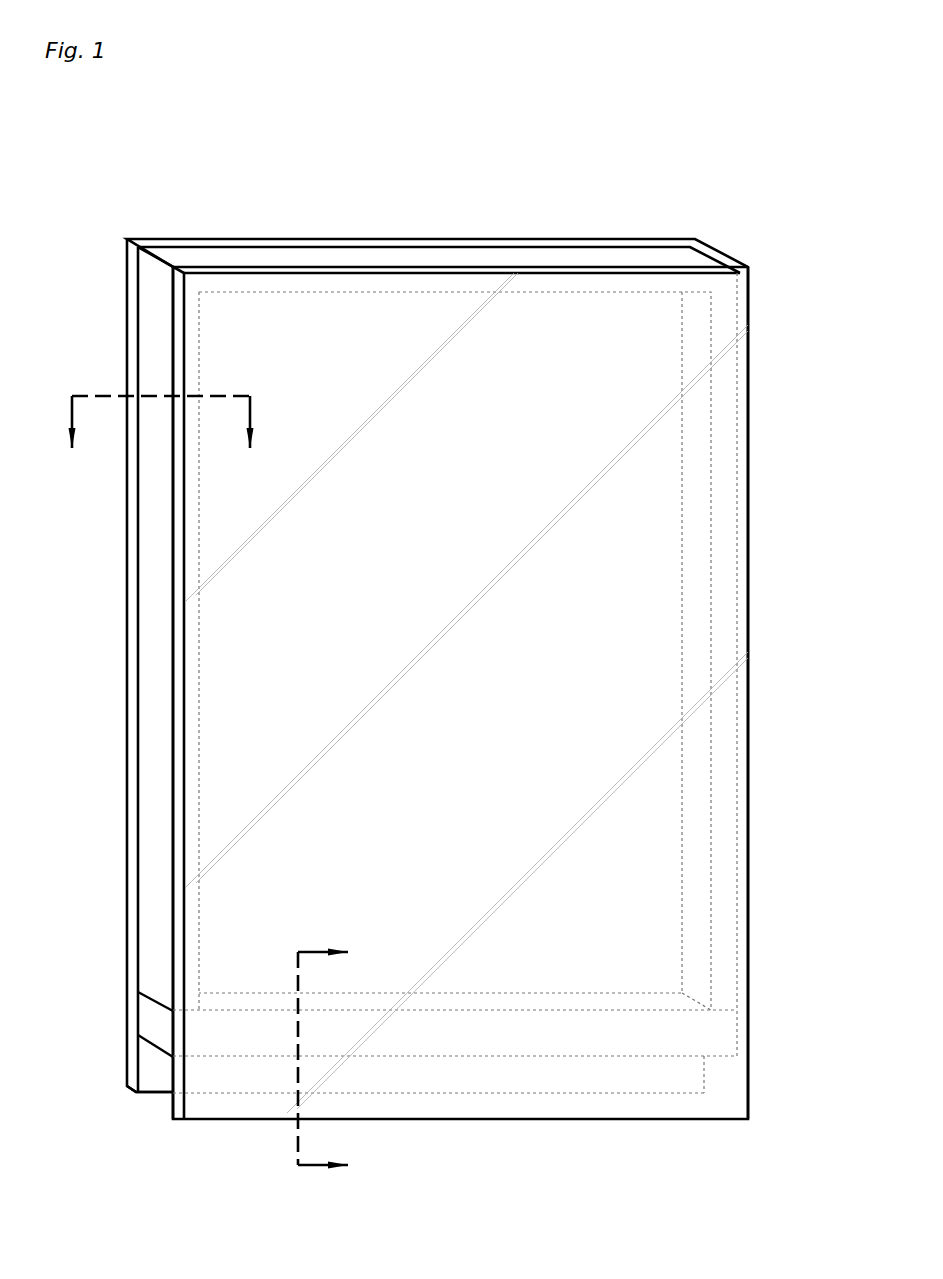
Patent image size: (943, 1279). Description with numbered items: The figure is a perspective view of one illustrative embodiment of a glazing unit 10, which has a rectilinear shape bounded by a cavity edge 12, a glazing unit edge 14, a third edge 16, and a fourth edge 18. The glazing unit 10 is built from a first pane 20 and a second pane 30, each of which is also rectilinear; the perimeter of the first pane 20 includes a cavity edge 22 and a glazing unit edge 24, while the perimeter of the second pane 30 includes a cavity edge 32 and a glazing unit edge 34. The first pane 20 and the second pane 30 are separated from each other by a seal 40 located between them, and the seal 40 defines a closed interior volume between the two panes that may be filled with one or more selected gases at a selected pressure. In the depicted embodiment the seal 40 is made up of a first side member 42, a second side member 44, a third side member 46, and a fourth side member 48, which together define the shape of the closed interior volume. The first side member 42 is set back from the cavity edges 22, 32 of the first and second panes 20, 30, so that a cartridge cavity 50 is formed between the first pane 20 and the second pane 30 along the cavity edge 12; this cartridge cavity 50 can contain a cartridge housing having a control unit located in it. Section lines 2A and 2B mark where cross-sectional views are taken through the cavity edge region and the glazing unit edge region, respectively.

The glazing unit 10 is at (652, 125).
The cavity edge 12 is at (553, 1122).
The glazing unit edge 14 is at (127, 350).
The third edge 16 is at (750, 455).
The fourth edge 18 is at (566, 240).
The first pane 20 is at (655, 1122).
The cavity edge 22 is at (230, 1120).
The glazing unit edge 24 is at (176, 795).
The second pane 30 is at (125, 885).
The cavity edge 32 is at (160, 1092).
The glazing unit edge 34 is at (135, 775).
The seal 40 is at (152, 740).
The first side member 42 is at (448, 1056).
The second side member 44 is at (155, 527).
The third side member 46 is at (737, 560).
The fourth side member 48 is at (397, 256).
The cartridge cavity 50 is at (160, 1072).
The section line 2A is at (343, 1059).
The section line 2B is at (162, 408).